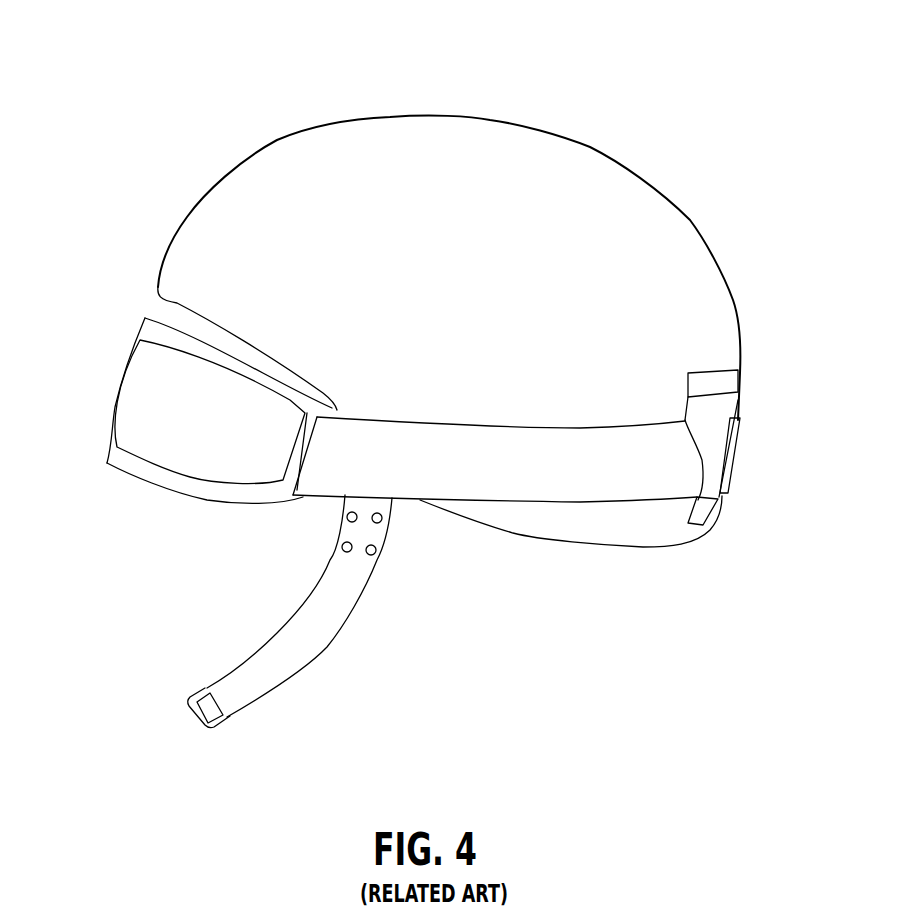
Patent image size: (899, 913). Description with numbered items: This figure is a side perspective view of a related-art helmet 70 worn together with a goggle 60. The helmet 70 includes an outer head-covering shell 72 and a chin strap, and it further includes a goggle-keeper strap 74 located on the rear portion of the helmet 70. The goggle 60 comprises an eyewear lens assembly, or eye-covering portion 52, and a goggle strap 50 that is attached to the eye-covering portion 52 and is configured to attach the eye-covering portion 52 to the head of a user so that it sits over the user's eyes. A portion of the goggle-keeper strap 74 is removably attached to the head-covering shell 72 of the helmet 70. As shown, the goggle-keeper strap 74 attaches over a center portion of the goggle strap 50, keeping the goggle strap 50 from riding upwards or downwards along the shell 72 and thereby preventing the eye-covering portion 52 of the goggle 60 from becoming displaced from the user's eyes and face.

The helmet 70 is at (487, 256).
The head-covering shell 72 is at (545, 152).
The goggle-keeper strap 74 is at (760, 368).
The goggle strap 50 is at (505, 467).
The eye-covering portion 52 is at (152, 382).
The goggle 60 is at (145, 534).